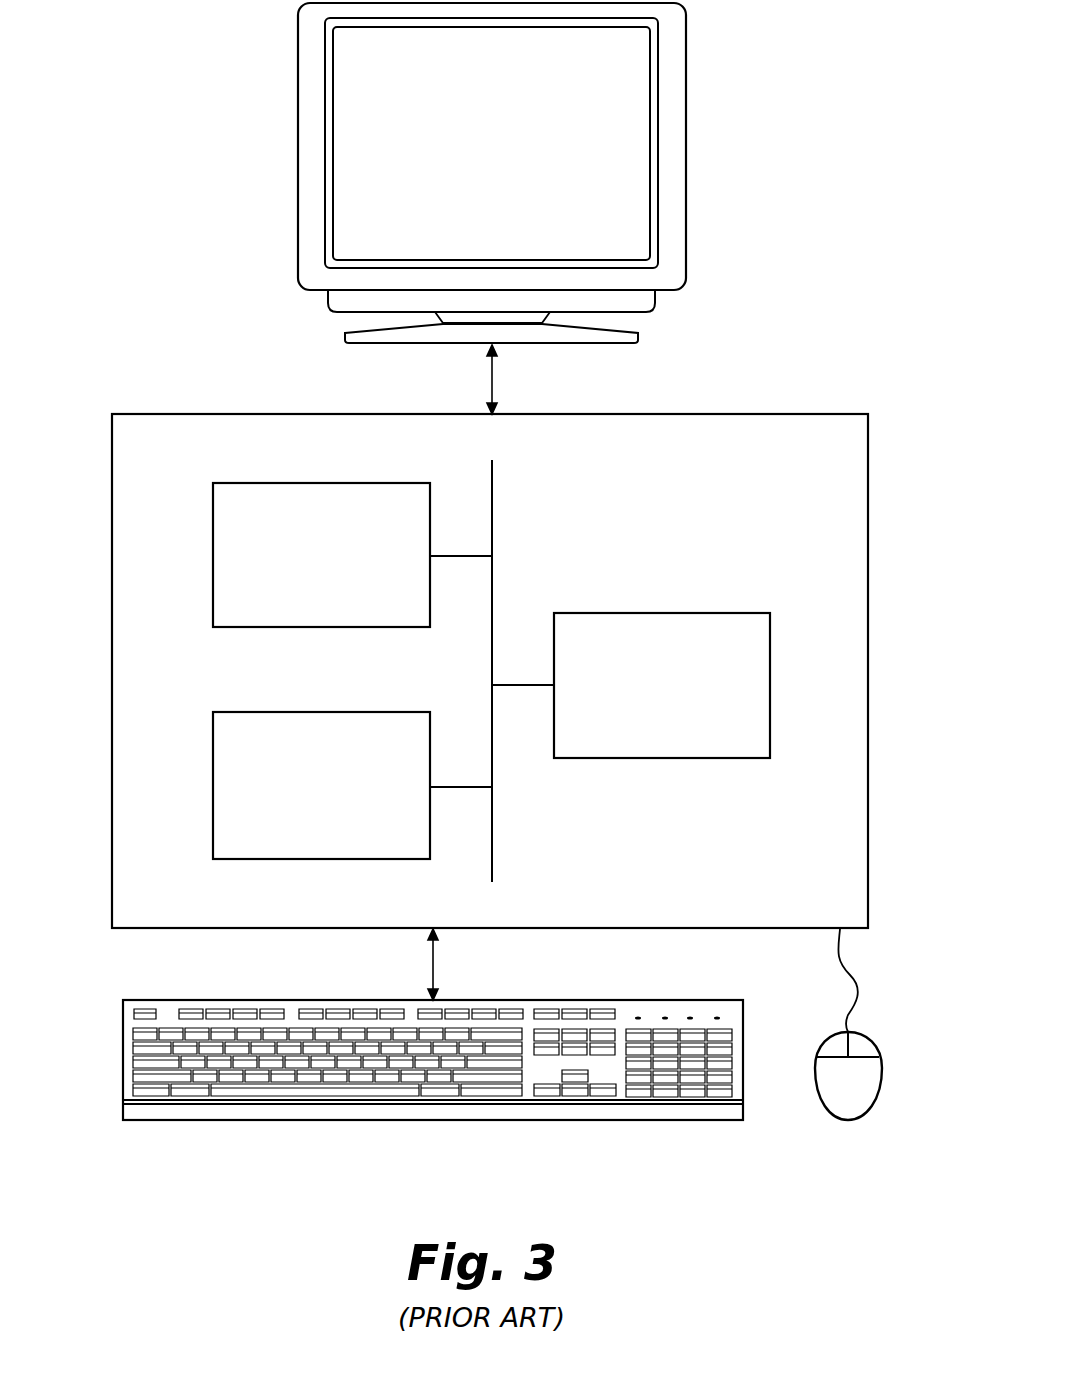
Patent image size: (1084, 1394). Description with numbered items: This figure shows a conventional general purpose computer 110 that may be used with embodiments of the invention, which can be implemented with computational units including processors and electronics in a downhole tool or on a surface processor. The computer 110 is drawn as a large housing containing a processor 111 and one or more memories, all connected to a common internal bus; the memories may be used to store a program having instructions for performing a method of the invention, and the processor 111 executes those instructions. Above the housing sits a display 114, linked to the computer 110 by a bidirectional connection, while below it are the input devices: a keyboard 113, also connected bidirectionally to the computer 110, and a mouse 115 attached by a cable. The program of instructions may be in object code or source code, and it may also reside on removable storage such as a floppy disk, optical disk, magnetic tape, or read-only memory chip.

The general purpose computer 110 is at (773, 415).
The processor 111 is at (683, 760).
The keyboard 113 is at (122, 1053).
The display 114 is at (686, 135).
The mouse 115 is at (885, 1072).